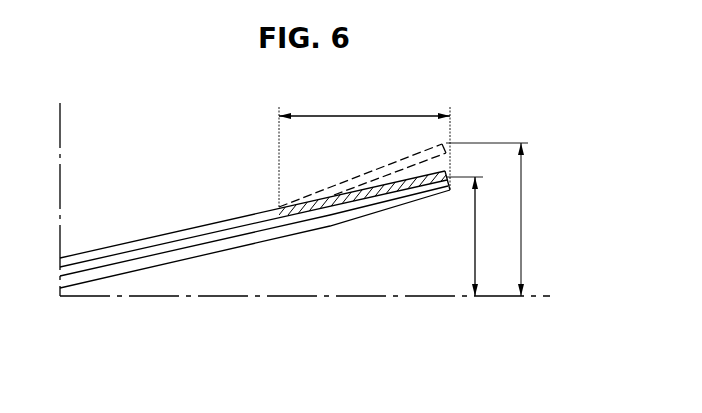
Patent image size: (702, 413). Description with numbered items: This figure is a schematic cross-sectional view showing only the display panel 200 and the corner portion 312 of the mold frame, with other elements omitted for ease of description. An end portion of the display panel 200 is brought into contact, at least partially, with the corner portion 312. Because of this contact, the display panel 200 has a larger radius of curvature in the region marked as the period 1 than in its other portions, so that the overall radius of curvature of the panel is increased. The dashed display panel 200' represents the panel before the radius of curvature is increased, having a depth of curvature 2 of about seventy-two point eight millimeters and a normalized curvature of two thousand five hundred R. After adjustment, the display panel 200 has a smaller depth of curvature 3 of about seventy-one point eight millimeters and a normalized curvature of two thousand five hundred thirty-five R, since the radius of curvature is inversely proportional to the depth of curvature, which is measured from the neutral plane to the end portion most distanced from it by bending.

The display panel 200 is at (272, 258).
The corner portion 312 is at (161, 264).
The display panel before the radius of curvature is increased 200' is at (362, 254).
The period where the radius of curvature increases 1 is at (364, 147).
The depth of curvature before adjustment 2 is at (494, 219).
The depth of curvature after adjustment 3 is at (470, 236).